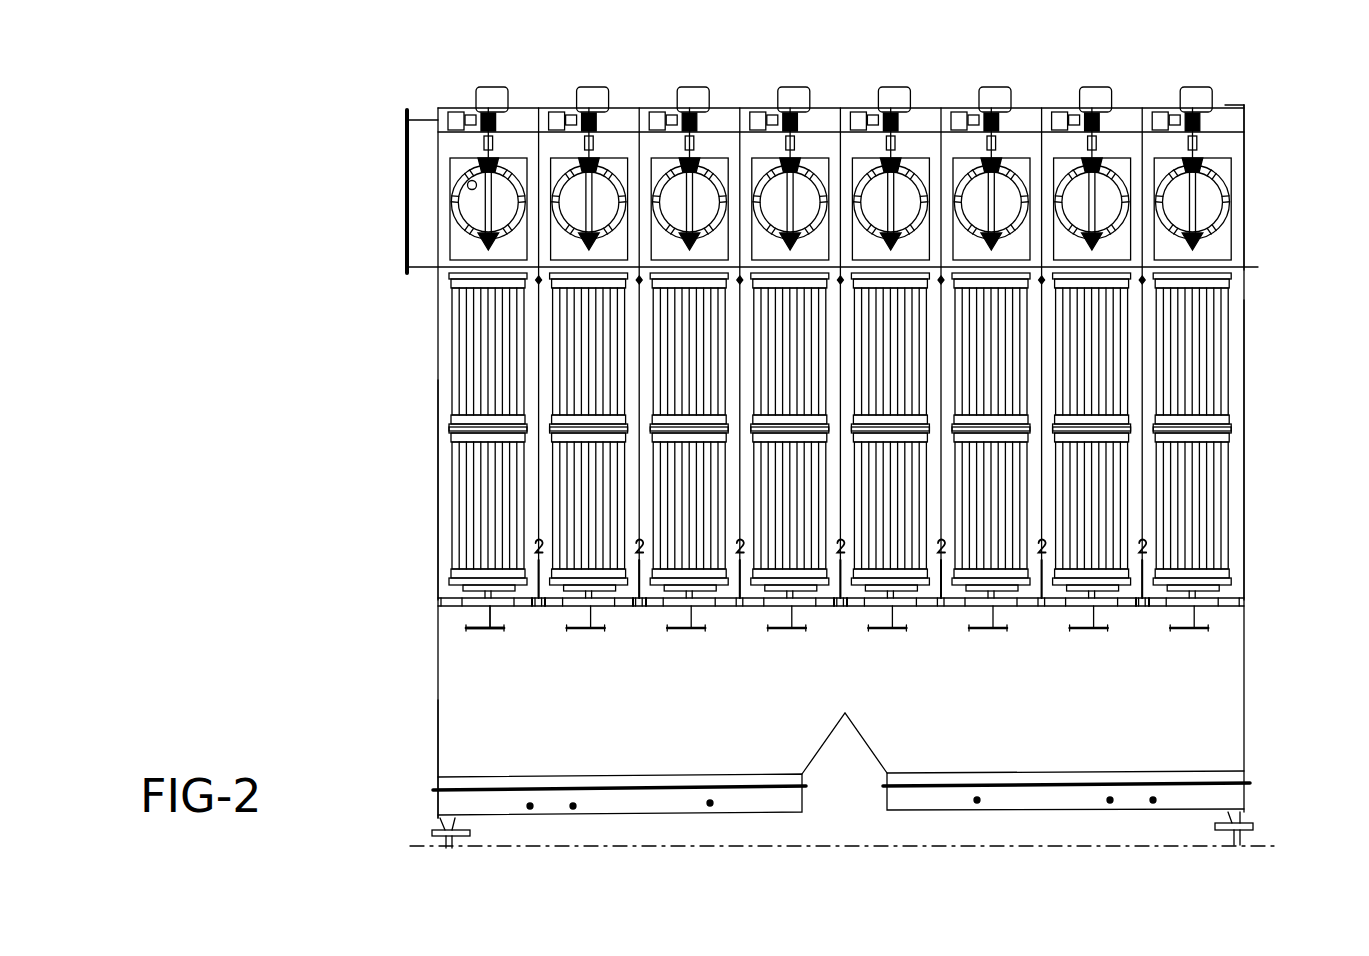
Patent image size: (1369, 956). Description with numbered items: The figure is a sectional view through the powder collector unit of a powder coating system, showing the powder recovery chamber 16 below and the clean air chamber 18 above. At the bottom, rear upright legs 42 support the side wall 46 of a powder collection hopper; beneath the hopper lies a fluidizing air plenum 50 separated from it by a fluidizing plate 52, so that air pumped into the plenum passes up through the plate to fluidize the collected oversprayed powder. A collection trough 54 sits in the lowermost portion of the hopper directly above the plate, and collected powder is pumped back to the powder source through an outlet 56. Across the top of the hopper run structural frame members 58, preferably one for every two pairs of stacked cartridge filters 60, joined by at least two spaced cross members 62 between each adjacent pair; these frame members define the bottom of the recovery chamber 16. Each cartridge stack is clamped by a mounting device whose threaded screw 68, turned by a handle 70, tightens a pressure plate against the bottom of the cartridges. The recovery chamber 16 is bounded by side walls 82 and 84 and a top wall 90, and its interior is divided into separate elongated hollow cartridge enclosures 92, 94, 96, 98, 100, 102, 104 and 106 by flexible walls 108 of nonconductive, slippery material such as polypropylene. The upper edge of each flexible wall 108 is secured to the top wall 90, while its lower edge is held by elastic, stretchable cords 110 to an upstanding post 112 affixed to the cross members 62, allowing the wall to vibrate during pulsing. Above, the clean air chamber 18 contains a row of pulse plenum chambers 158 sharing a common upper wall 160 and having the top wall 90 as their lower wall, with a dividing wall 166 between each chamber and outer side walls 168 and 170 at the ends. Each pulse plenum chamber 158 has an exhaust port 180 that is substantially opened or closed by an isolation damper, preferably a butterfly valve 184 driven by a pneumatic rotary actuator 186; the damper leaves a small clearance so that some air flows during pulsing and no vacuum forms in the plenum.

The powder recovery chamber 16 is at (437, 412).
The clean air chamber 18 is at (766, 92).
The rear upright legs 42 is at (435, 831).
The side wall of powder collection hopper 46 is at (490, 740).
The fluidizing air plenum 50 is at (742, 796).
The fluidizing plate 52 is at (985, 792).
The collection trough 54 is at (936, 758).
The outlet 56 is at (615, 778).
The structural frame members 58 is at (452, 602).
The cartridge filters 60 is at (1205, 487).
The cross members 62 is at (535, 606).
The threaded screw 68 is at (458, 630).
The handle 70 is at (486, 623).
The side wall 82 is at (437, 460).
The side wall 84 is at (1246, 392).
The top wall 90 is at (440, 273).
The cartridge enclosure 92 is at (448, 592).
The cartridge enclosure 94 is at (551, 600).
The cartridge enclosure 96 is at (650, 600).
The cartridge enclosure 98 is at (752, 600).
The cartridge enclosure 100 is at (852, 600).
The cartridge enclosure 102 is at (952, 600).
The cartridge enclosure 104 is at (1052, 600).
The cartridge enclosure 106 is at (1240, 592).
The flexible walls 108 is at (832, 429).
The elastic stretchable cords 110 is at (536, 545).
The upstanding post 112 is at (536, 568).
The pulse plenum chambers 158 is at (548, 137).
The upper wall 160 is at (824, 135).
The dividing wall 166 is at (647, 135).
The outer side wall 168 is at (437, 188).
The outer side wall 170 is at (1246, 142).
The exhaust port 180 is at (469, 182).
The butterfly valve 184 is at (577, 218).
The pneumatic rotary actuator 186 is at (495, 90).